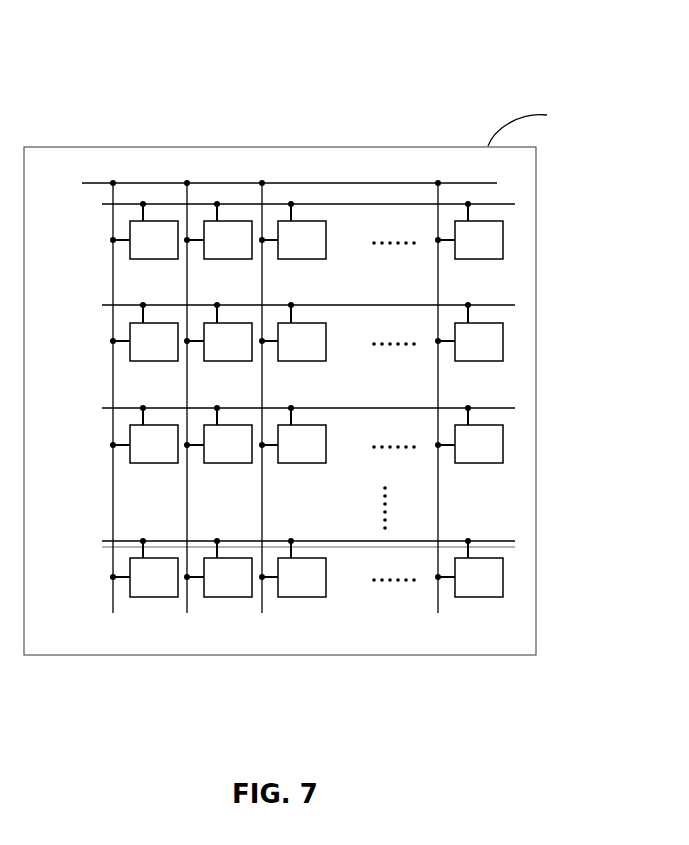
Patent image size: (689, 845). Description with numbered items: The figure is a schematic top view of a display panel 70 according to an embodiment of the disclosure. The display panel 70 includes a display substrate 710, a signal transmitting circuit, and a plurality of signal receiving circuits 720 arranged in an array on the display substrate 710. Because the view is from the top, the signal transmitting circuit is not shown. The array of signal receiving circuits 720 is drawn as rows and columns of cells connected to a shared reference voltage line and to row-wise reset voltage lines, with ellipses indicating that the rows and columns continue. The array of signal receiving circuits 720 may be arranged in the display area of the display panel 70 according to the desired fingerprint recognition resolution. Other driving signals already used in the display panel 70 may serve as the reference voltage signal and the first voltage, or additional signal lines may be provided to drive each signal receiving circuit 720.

The display panel 70 is at (528, 33).
The display substrate 710 is at (309, 383).
The signal receiving circuit 720 is at (326, 447).